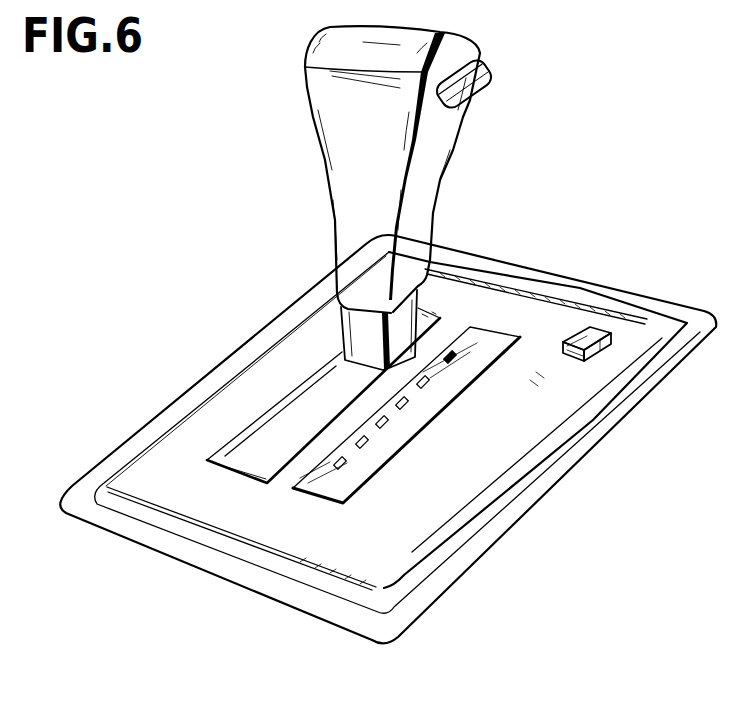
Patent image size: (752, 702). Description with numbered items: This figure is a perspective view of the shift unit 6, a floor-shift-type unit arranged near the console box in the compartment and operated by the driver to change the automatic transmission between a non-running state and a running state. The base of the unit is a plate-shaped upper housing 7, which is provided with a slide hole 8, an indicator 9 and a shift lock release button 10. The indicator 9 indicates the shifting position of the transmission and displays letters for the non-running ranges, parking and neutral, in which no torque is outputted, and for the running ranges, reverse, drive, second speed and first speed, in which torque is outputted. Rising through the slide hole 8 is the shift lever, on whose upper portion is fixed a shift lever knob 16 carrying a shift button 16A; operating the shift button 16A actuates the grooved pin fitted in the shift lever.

The shift unit 6 is at (160, 142).
The upper housing 7 is at (176, 445).
The slide hole 8 is at (300, 407).
The indicator 9 is at (477, 340).
The shift lock release button 10 is at (588, 340).
The shift lever knob 16 is at (313, 63).
The shift button 16A is at (482, 88).